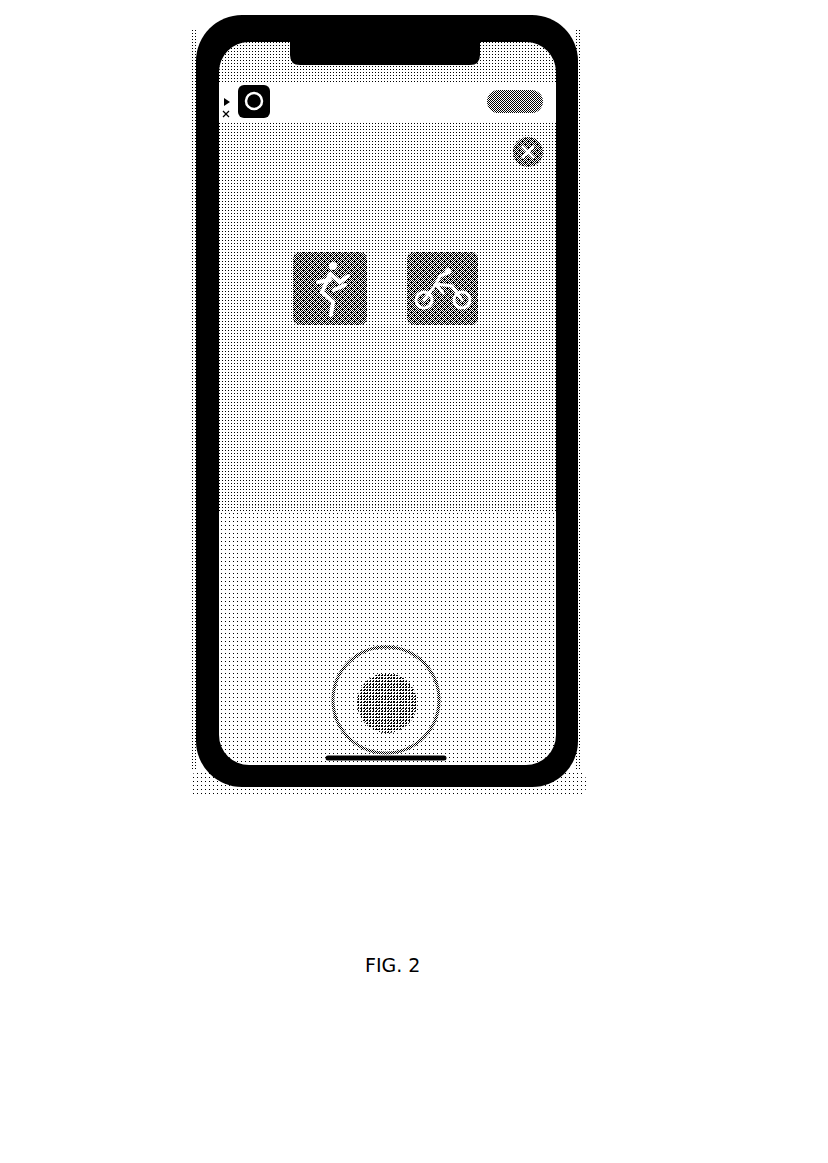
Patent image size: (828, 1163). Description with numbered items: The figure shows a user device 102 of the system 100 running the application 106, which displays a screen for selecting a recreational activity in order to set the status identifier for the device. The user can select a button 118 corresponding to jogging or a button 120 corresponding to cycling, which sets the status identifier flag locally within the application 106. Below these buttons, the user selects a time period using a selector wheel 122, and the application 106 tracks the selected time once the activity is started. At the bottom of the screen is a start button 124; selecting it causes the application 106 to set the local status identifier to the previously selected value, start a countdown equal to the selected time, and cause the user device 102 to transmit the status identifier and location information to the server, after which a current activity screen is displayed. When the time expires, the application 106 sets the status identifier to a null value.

The system 100 is at (116, 123).
The user device 102 is at (200, 572).
The application 106 is at (240, 265).
The button 118 is at (297, 293).
The button 120 is at (475, 275).
The selector wheel 122 is at (522, 525).
The start button 124 is at (442, 697).